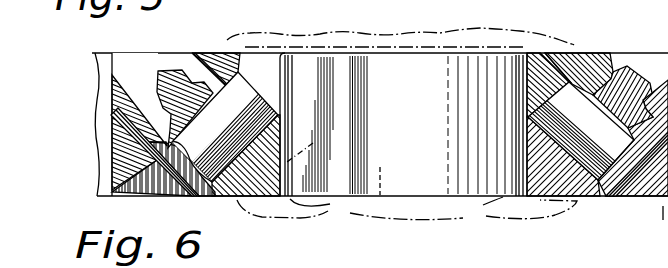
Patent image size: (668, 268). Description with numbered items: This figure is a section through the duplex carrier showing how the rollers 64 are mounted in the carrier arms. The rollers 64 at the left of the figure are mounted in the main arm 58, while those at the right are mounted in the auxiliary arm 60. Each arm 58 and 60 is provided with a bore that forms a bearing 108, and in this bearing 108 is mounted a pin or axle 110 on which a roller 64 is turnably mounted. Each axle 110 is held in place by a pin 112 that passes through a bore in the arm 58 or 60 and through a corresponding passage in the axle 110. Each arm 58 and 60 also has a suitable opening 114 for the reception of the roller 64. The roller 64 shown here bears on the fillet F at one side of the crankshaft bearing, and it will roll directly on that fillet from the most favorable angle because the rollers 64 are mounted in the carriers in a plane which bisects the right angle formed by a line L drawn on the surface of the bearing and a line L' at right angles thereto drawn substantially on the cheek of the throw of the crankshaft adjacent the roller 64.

The main arm 58 is at (120, 156).
The auxiliary arm 60 is at (607, 54).
The roller 64 is at (160, 84).
The bearing 108 is at (263, 48).
The pin or axle 110 is at (150, 182).
The pin 112 is at (112, 118).
The opening 114 is at (137, 60).
The line L is at (304, 143).
The line L' is at (376, 171).
The fillet F is at (450, 209).